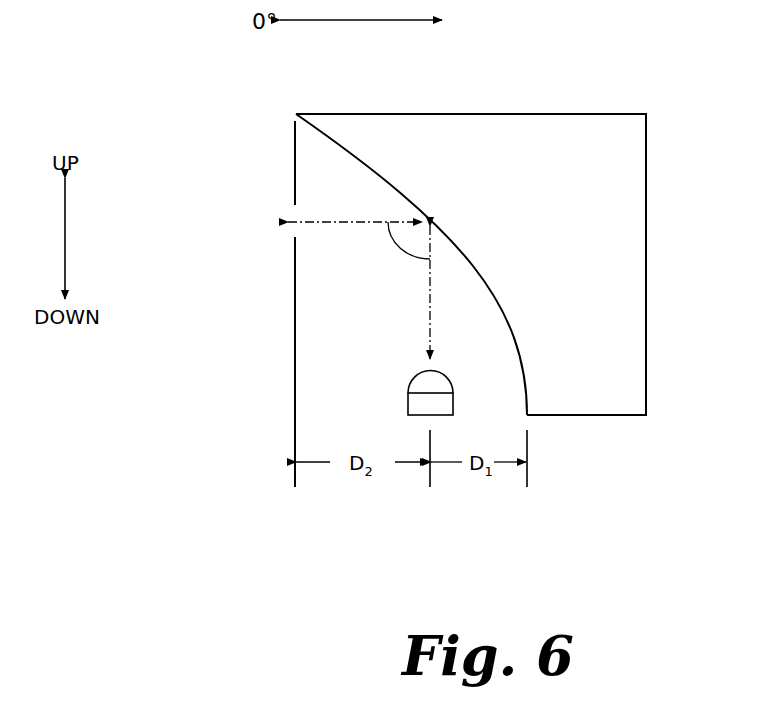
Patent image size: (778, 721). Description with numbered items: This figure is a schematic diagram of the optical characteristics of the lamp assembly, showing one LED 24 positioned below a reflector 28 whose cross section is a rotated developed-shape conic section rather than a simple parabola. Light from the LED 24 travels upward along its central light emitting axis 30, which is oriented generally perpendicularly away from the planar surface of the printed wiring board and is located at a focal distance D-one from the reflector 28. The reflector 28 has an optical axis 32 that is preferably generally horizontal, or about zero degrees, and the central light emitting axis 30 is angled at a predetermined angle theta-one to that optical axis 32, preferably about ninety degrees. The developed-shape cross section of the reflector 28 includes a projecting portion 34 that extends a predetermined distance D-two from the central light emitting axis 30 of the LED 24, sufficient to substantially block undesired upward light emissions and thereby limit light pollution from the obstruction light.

The LED 24 is at (408, 399).
The reflector 28 is at (370, 167).
The central light emitting axis 30 is at (430, 280).
The optical axis 32 is at (365, 224).
The projecting portion 34 is at (310, 146).